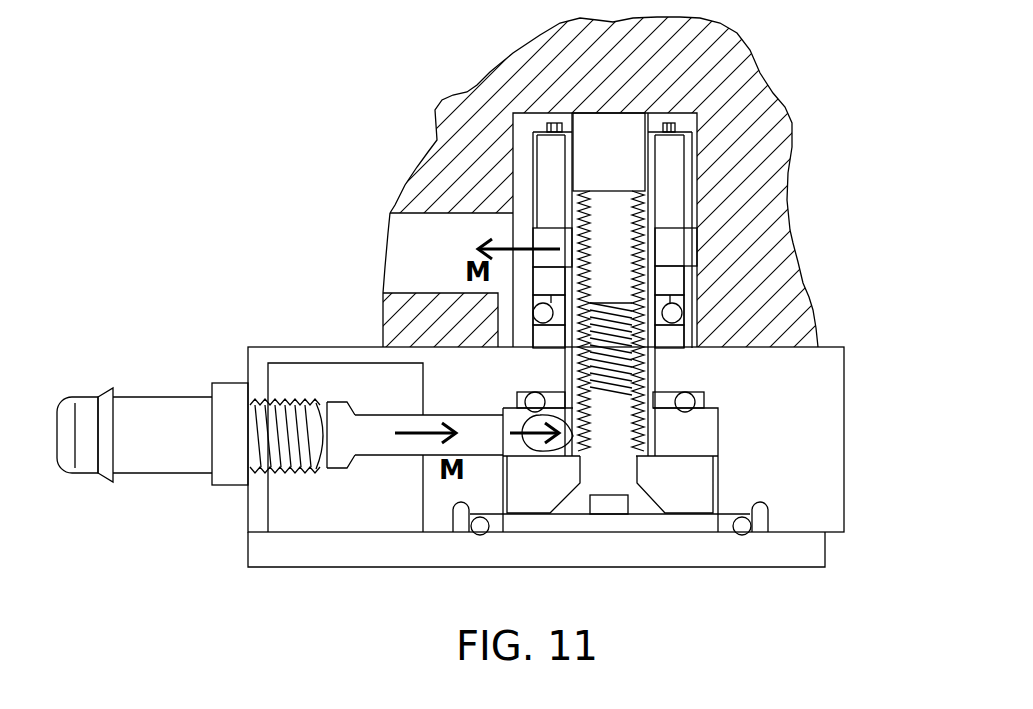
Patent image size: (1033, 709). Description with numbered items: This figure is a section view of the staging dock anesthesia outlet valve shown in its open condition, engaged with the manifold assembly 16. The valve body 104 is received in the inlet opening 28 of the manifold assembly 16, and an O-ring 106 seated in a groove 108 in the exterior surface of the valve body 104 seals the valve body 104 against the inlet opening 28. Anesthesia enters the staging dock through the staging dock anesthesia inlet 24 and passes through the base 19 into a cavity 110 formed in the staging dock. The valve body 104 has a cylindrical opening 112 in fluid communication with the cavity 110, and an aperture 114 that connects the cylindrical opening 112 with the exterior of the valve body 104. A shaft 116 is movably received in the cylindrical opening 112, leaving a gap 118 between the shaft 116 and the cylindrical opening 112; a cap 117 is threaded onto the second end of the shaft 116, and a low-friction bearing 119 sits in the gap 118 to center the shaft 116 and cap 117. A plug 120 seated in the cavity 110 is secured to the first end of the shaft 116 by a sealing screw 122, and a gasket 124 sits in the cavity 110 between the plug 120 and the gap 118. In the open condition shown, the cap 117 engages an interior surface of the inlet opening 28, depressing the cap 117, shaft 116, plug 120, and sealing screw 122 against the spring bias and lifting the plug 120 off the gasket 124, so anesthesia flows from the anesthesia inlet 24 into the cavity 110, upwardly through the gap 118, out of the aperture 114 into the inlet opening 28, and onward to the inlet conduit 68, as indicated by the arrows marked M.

The manifold assembly 16 is at (478, 95).
The base 19 is at (345, 511).
The staging dock anesthesia inlet 24 is at (167, 405).
The inlet opening 28 is at (515, 139).
The inlet conduit 68 is at (399, 269).
The valve body 104 is at (673, 172).
The O-ring 106 is at (679, 315).
The groove 108 is at (688, 300).
The cavity 110 is at (702, 437).
The cylindrical opening 112 is at (648, 367).
The aperture 114 is at (545, 243).
The shaft 116 is at (634, 251).
The cap 117 is at (592, 186).
The gap 118 is at (570, 372).
The bearing 119 is at (670, 126).
The plug 120 is at (703, 481).
The sealing screw 122 is at (577, 512).
The gasket 124 is at (703, 400).